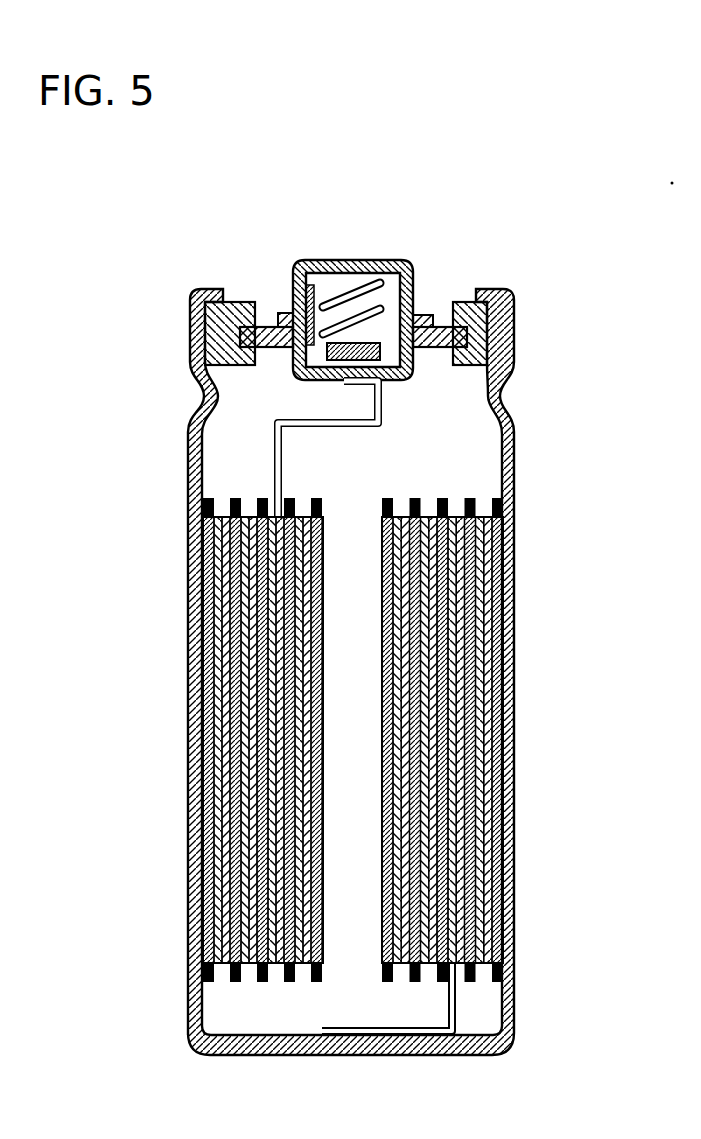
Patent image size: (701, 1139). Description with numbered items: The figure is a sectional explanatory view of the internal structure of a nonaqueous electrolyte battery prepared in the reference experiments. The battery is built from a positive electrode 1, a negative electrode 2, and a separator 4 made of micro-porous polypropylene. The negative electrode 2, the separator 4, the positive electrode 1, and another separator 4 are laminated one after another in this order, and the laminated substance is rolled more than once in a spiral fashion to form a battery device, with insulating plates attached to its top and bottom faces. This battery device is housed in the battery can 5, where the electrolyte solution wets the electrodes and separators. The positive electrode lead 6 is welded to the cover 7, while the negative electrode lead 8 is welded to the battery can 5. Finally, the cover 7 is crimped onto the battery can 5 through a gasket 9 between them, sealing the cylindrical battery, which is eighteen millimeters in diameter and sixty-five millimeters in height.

The positive electrode 1 is at (514, 660).
The negative electrode 2 is at (512, 838).
The separator 4 is at (512, 735).
The battery can 5 is at (514, 572).
The positive electrode lead 6 is at (273, 468).
The cover 7 is at (428, 350).
The negative electrode lead 8 is at (458, 1012).
The gasket 9 is at (237, 300).